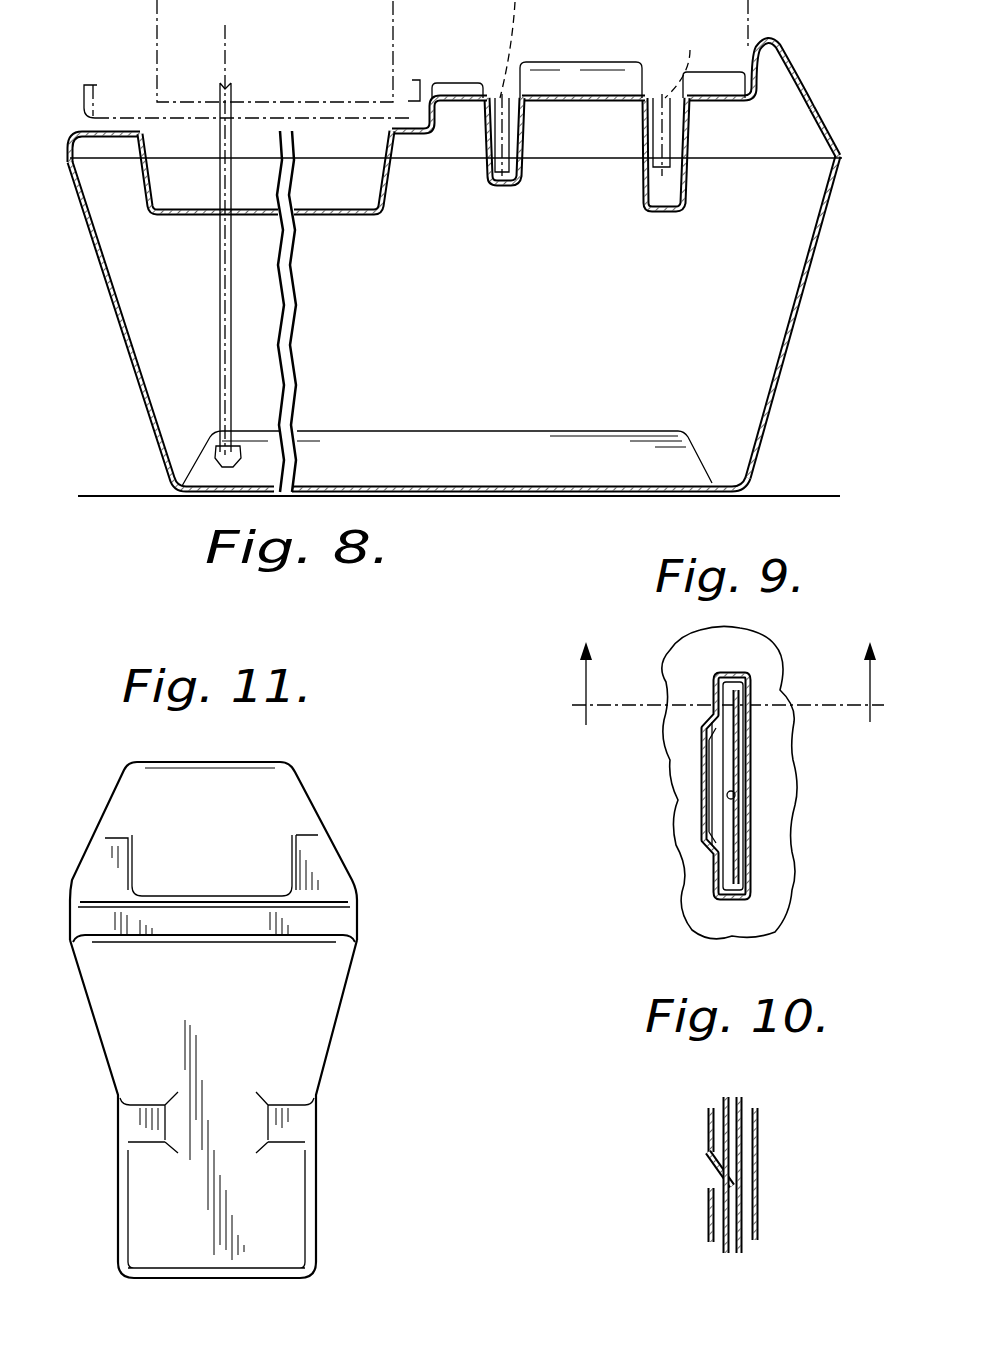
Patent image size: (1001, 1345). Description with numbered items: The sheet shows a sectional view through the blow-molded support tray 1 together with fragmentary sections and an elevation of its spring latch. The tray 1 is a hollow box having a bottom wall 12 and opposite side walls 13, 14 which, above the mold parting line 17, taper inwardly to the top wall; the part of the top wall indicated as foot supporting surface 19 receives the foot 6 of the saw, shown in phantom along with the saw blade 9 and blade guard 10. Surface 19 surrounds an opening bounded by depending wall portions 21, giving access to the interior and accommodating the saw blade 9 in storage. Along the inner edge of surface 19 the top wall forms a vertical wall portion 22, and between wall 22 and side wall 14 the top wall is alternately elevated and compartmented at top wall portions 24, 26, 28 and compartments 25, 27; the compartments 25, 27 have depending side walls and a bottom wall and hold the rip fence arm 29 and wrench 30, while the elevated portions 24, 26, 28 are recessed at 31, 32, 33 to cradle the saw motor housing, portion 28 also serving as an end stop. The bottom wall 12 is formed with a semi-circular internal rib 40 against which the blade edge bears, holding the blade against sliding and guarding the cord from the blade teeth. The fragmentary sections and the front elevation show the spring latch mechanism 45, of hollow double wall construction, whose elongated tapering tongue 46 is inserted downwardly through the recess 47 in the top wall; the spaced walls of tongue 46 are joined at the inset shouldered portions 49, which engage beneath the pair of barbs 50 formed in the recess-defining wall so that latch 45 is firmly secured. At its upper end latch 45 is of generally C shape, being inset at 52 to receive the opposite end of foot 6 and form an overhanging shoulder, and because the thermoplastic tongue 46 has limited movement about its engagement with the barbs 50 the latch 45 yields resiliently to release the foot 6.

In FIG. 8, the support tray 1 is at (803, 398).
In FIG. 8, the foot 6 is at (128, 118).
In FIG. 8, the saw blade 9 is at (220, 262).
In FIG. 8, the bottom wall 12 is at (545, 495).
In FIG. 8, the side wall 13 is at (128, 365).
In FIG. 8, the side wall 14 is at (800, 330).
In FIG. 8, the mold parting line 17 is at (845, 157).
In FIG. 8, the foot supporting surface 19 is at (80, 129).
In FIG. 8, the depending wall portions 21 is at (386, 192).
In FIG. 8, the vertical wall portion 22 is at (443, 124).
In FIG. 8, the top wall portion 24 is at (456, 92).
In FIG. 8, the compartment 25 is at (522, 146).
In FIG. 8, the top wall portion 26 is at (622, 62).
In FIG. 8, the compartment 27 is at (685, 167).
In FIG. 8, the top wall portion 28 is at (778, 47).
In FIG. 8, the rip fence arm 29 is at (495, 88).
In FIG. 8, the wrench 30 is at (675, 100).
In FIG. 8, the recess 31 is at (434, 96).
In FIG. 8, the recess 32 is at (560, 95).
In FIG. 8, the recess 33 is at (712, 98).
In FIG. 8, the semi-circular internal rib 40 is at (500, 431).
In FIG. 9, the blade guard 10 is at (728, 683).
In FIG. 9, the spring latch mechanism 45 is at (694, 783).
In FIG. 11, the spring latch mechanism 45 is at (352, 811).
In FIG. 11, the tongue 46 is at (338, 1026).
In FIG. 9, the recess 47 is at (748, 805).
In FIG. 10, the recess 47 is at (740, 1250).
In FIG. 9, the inset shouldered portions 49 is at (749, 694).
In FIG. 10, the inset shouldered portions 49 is at (750, 1184).
In FIG. 11, the inset shouldered portions 49 is at (135, 1123).
In FIG. 9, the barbs 50 is at (708, 695).
In FIG. 10, the barbs 50 is at (712, 1173).
In FIG. 11, the inset 52 is at (330, 910).